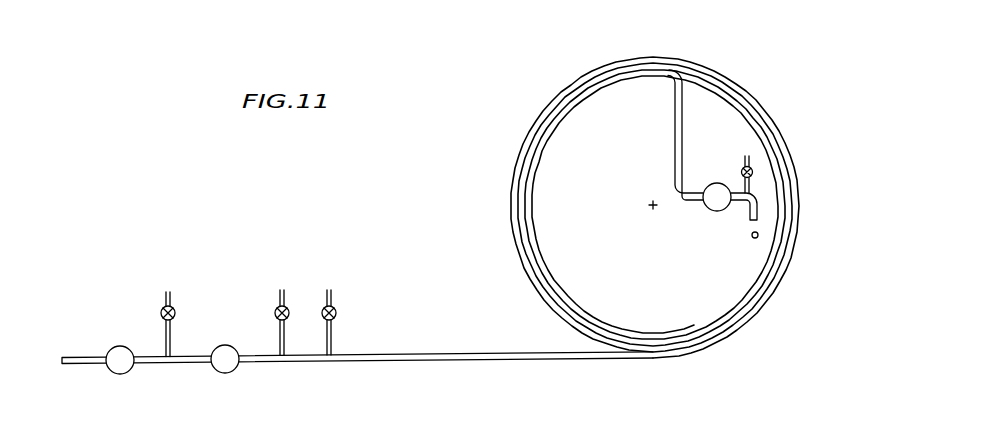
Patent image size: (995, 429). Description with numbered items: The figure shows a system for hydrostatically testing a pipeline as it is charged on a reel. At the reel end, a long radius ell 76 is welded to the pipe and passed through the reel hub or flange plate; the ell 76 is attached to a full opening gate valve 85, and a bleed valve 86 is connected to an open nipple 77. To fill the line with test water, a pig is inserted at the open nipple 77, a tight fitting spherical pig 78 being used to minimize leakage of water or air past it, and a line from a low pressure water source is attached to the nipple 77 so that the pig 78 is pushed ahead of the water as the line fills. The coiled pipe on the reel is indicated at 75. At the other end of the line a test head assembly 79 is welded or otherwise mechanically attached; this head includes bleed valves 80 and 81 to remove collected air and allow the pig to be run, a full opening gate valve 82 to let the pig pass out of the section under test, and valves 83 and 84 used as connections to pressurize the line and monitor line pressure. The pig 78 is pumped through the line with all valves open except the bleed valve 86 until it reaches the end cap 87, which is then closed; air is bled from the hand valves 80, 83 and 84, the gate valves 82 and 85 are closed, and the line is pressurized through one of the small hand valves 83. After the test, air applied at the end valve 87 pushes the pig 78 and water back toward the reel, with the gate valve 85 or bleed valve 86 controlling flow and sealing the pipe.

The coiled tube 75 is at (666, 265).
The long radius ell 76 is at (683, 97).
The open nipple 77 is at (758, 207).
The spherical pig 78 is at (758, 237).
The test head assembly 79 is at (190, 364).
The bleed valve 80 is at (175, 309).
The bleed valve 81 is at (117, 347).
The full opening gate valve 82 is at (233, 372).
The valve 83 is at (284, 294).
The valve 84 is at (333, 294).
The full opening gate valve 85 is at (711, 183).
The bleed valve 86 is at (755, 172).
The end cap 87 is at (72, 365).